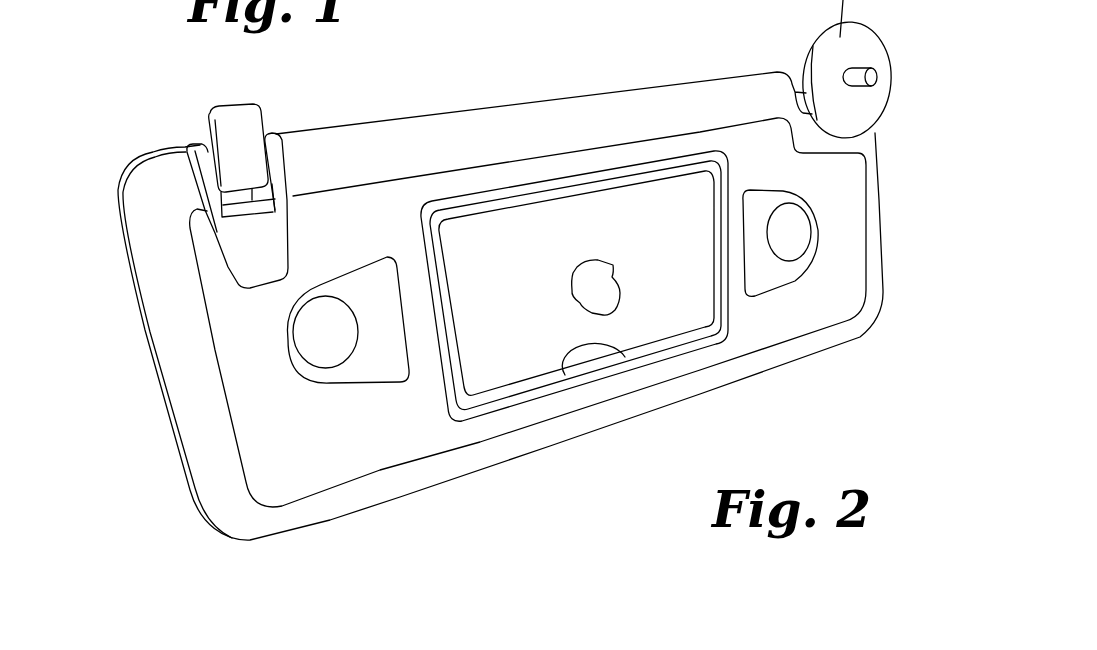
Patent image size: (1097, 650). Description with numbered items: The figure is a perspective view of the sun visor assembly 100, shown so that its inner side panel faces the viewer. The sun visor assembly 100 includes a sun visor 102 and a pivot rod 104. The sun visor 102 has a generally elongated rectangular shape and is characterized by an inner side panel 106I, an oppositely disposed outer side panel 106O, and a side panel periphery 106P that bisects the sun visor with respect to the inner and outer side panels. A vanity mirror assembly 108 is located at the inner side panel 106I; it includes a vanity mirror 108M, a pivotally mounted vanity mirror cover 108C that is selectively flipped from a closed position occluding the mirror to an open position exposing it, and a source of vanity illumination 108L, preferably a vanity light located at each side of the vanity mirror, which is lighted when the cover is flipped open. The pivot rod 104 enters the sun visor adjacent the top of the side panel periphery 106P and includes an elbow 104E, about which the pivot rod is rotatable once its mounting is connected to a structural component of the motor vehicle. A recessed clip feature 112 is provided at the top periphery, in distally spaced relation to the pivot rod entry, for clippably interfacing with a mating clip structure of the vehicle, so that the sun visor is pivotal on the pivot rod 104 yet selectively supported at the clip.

The sun visor assembly 100 is at (585, 76).
The sun visor 102 is at (452, 108).
The pivot rod 104 is at (796, 70).
The elbow 104E is at (853, 70).
The outer side panel 106O is at (167, 426).
The side panel periphery 106P is at (143, 337).
The inner side panel 106I is at (382, 452).
The vanity mirror assembly 108 is at (706, 373).
The vanity mirror cover 108C is at (500, 365).
The vanity mirror 108M is at (597, 293).
The source of vanity illumination 108L is at (312, 350).
The recessed clip feature 112 is at (265, 112).